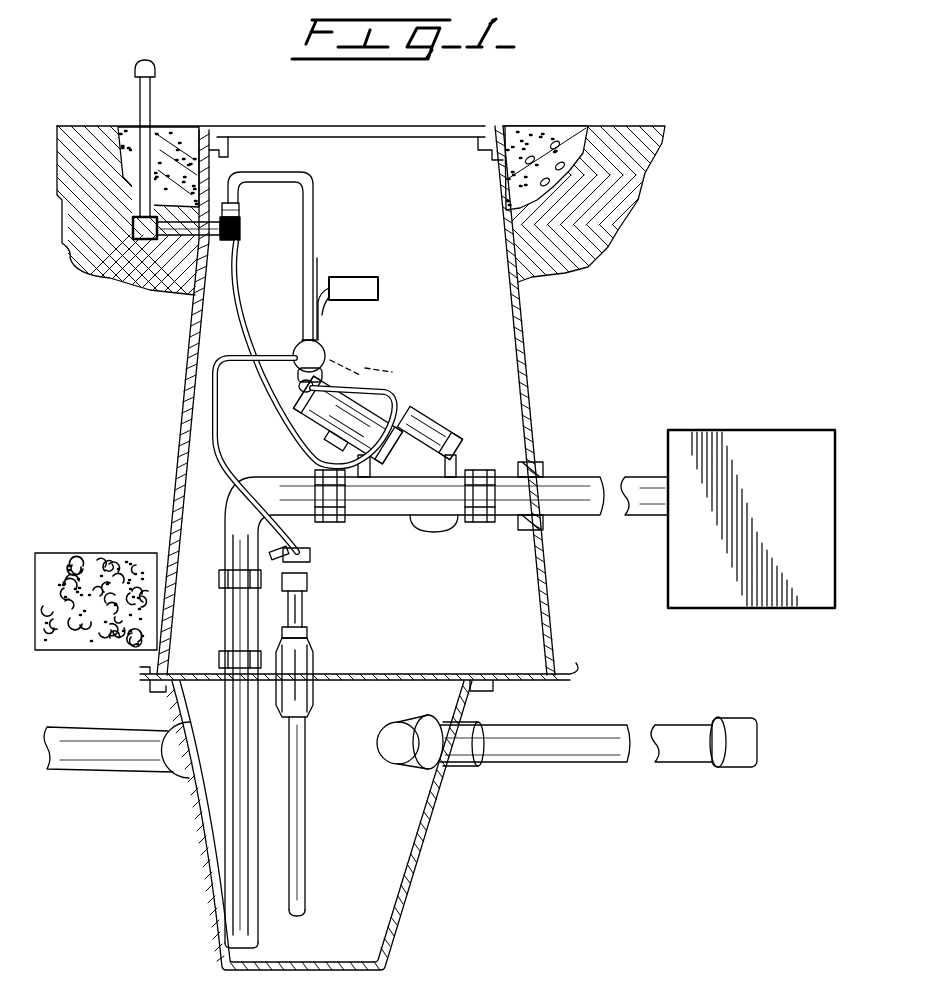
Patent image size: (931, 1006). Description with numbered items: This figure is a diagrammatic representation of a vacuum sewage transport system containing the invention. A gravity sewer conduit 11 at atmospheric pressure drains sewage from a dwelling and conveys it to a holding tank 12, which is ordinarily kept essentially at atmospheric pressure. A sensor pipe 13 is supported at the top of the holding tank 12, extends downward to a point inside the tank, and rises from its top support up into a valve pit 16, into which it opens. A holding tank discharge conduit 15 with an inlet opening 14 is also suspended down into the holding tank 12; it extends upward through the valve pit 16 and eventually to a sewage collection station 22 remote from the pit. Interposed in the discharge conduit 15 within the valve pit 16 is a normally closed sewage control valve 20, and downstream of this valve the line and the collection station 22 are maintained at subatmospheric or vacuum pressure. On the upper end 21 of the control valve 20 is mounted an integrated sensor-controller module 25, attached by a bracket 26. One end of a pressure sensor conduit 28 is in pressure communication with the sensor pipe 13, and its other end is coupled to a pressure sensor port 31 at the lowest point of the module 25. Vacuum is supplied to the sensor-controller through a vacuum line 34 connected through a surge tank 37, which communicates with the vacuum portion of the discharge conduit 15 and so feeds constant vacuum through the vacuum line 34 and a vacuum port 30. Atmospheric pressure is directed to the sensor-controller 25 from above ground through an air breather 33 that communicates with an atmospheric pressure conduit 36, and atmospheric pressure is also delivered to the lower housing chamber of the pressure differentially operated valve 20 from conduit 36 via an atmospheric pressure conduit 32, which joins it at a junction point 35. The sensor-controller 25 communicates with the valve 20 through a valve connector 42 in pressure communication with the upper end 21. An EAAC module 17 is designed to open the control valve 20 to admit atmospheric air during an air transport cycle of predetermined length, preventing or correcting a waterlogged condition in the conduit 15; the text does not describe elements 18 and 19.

The gravity sewer conduit 11 is at (33, 750).
The holding tank 12 is at (397, 928).
The sensor pipe 13 is at (312, 845).
The inlet opening 14 is at (298, 921).
The holding tank discharge conduit 15 is at (657, 519).
The valve pit 16 is at (520, 357).
The EAAC module 17 is at (370, 277).
The electrical leads 18 is at (318, 283).
The control box terminal 19 is at (378, 300).
The sewage control valve 20 is at (359, 477).
The upper end 21 is at (356, 360).
The sewage collection station 22 is at (702, 432).
The integrated sensor-controller module 25 is at (318, 349).
The bracket 26 is at (326, 352).
The pressure sensor conduit 28 is at (216, 462).
The vacuum port 30 is at (299, 378).
The pressure sensor port 31 is at (294, 353).
The atmospheric pressure conduit 32 is at (297, 354).
The air breather 33 is at (151, 90).
The vacuum line 34 is at (398, 399).
The junction point 35 is at (222, 247).
The atmospheric pressure conduit 36 is at (318, 197).
The surge tank 37 is at (446, 432).
The valve connector 42 is at (372, 371).